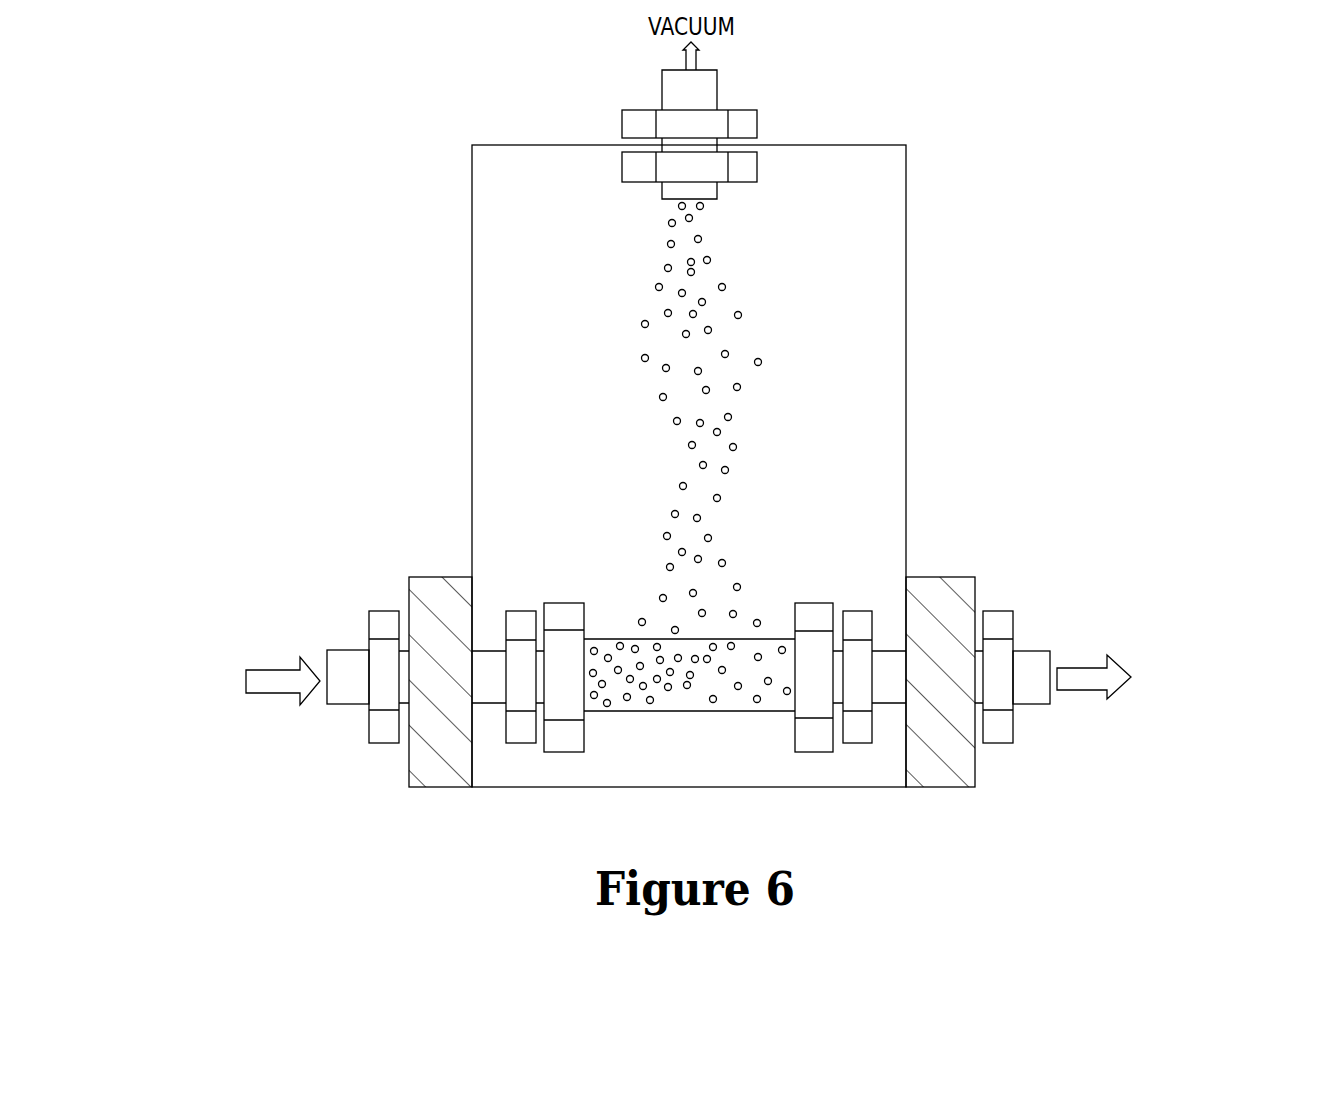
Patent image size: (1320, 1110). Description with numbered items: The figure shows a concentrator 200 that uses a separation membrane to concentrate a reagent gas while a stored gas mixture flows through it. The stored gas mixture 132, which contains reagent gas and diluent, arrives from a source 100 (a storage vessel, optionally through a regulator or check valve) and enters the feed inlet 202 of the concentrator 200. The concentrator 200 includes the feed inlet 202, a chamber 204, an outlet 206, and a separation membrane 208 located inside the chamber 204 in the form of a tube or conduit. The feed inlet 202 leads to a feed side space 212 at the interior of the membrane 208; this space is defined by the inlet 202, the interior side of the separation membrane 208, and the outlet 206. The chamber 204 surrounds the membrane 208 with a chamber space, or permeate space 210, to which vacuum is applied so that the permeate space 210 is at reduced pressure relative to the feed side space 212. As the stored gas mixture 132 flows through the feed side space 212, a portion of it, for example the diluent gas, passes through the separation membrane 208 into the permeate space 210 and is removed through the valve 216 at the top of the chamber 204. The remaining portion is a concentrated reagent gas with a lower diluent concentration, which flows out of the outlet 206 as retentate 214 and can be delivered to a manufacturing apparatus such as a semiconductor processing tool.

The source gas stream (SG diluted in inert) 100 is at (243, 760).
The stored gas mixture 132 is at (275, 668).
The concentrator 200 is at (973, 348).
The feed inlet 202 is at (352, 650).
The chamber 204 is at (906, 438).
The outlet 206 is at (1013, 630).
The separation membrane 208 is at (773, 700).
The permeate space 210 is at (838, 395).
The feed side space 212 is at (672, 700).
The retentate 214 is at (1125, 660).
The valve 216 is at (757, 125).